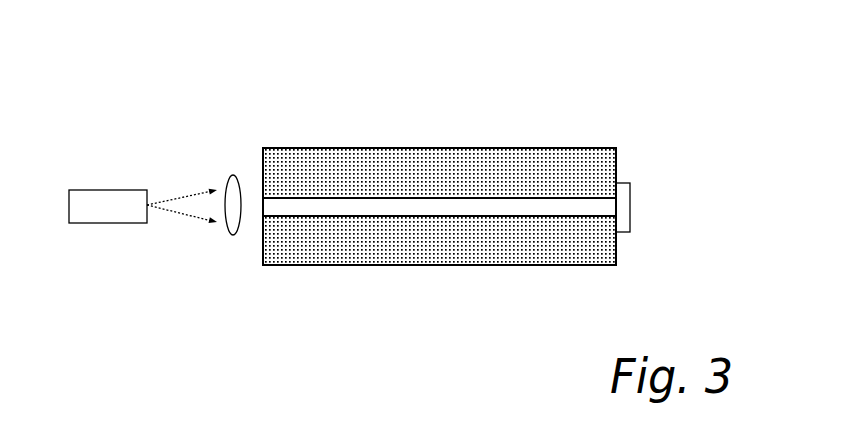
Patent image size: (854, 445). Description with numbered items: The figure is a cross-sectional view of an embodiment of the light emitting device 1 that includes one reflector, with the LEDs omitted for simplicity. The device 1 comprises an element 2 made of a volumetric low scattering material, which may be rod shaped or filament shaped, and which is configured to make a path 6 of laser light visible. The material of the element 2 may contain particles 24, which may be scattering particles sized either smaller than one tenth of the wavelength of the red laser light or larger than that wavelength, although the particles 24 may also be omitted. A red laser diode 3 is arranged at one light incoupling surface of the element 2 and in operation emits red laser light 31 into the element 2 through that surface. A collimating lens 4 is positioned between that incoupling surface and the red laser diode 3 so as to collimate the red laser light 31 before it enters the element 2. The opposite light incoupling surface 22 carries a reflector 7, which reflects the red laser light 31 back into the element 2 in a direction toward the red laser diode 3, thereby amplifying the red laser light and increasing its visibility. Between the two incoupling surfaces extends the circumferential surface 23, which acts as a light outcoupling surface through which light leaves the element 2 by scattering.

The light emitting device 1 is at (481, 201).
The element 2 is at (562, 149).
The red laser diode 3 is at (105, 210).
The collimating lens 4 is at (235, 232).
The path of laser light 6 is at (343, 207).
The reflector 7 is at (622, 193).
The second light incoupling surface 22 is at (616, 250).
The circumferential surface 23 is at (418, 268).
The particles 24 is at (557, 250).
The red laser light 31 is at (187, 195).